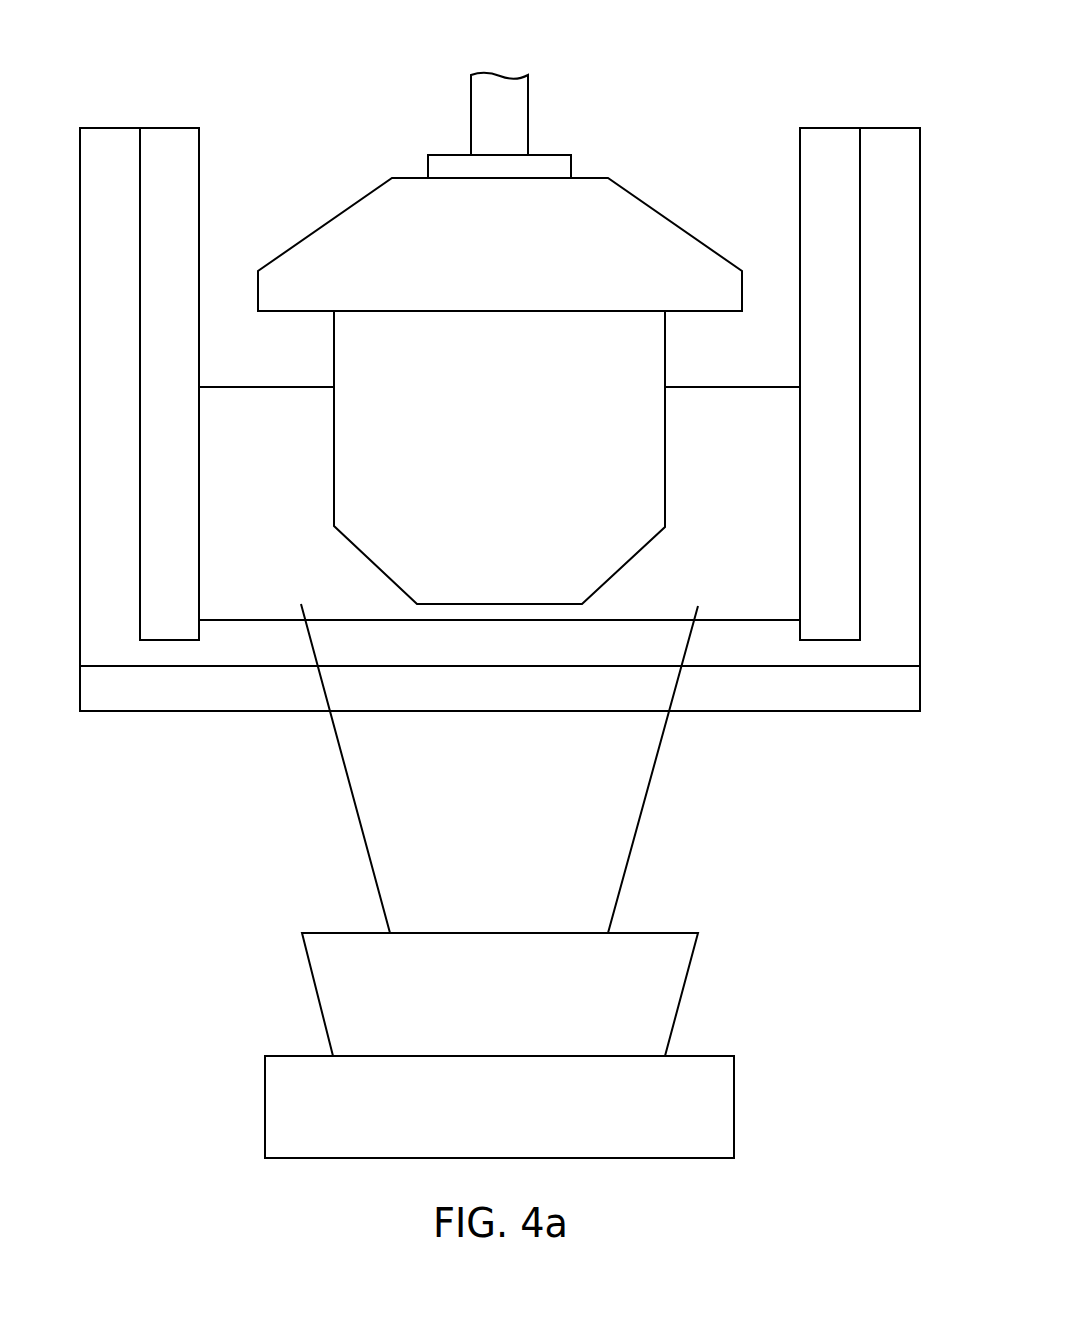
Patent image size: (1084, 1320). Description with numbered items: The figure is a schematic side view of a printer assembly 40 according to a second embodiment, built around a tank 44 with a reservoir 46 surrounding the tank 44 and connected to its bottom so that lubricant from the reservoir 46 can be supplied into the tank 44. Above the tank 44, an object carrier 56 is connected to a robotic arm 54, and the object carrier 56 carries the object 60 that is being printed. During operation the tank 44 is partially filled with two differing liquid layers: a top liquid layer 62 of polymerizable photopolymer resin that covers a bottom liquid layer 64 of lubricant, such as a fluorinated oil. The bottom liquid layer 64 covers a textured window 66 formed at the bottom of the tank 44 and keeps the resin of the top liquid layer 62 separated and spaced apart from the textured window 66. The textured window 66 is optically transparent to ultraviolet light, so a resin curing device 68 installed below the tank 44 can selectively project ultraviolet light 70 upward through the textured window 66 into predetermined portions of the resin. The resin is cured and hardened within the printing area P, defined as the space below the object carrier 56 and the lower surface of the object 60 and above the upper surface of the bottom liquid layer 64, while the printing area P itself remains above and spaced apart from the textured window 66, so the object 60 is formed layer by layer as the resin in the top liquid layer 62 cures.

The printer assembly 40 is at (749, 35).
The tank 44 is at (168, 156).
The reservoir 46 is at (108, 156).
The robotic arm 54 is at (528, 115).
The object carrier 56 is at (664, 217).
The object 60 is at (665, 350).
The top liquid layer 62 is at (752, 477).
The bottom liquid layer 64 is at (248, 630).
The textured window 66 is at (752, 689).
The resin curing device 68 is at (699, 1101).
The ultraviolet light 70 is at (643, 806).
The printing area P is at (566, 613).